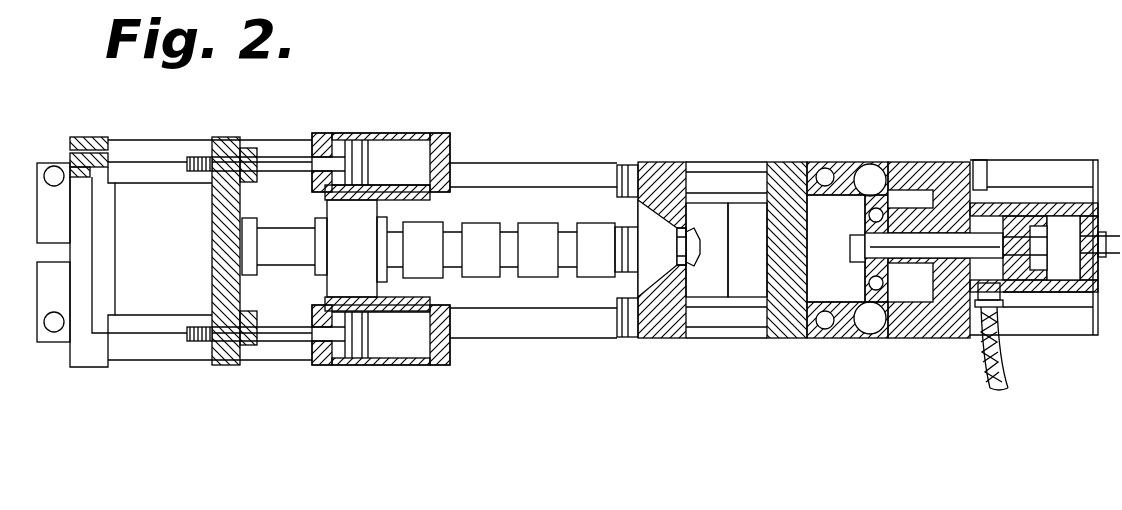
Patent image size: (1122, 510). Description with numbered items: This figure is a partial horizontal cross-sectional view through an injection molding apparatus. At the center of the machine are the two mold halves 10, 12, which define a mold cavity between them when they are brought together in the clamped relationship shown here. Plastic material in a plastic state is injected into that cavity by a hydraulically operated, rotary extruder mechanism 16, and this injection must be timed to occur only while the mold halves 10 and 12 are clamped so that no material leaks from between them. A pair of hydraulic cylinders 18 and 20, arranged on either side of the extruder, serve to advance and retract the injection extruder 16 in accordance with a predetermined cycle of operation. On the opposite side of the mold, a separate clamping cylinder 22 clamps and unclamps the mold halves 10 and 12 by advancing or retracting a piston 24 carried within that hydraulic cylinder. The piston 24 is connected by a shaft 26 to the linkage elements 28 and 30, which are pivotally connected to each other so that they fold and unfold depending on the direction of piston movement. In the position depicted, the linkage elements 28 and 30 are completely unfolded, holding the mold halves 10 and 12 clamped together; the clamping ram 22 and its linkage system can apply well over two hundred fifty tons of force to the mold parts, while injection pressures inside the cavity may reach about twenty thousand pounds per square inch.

The mold half 10 is at (720, 233).
The mold half 12 is at (760, 236).
The extruder mechanism 16 is at (582, 214).
The hydraulic cylinder 18 is at (405, 131).
The hydraulic cylinder 20 is at (384, 370).
The clamping cylinder 22 is at (1050, 200).
The piston 24 is at (1058, 294).
The shaft 26 is at (907, 242).
The linkage element 28 is at (842, 165).
The linkage element 30 is at (885, 168).